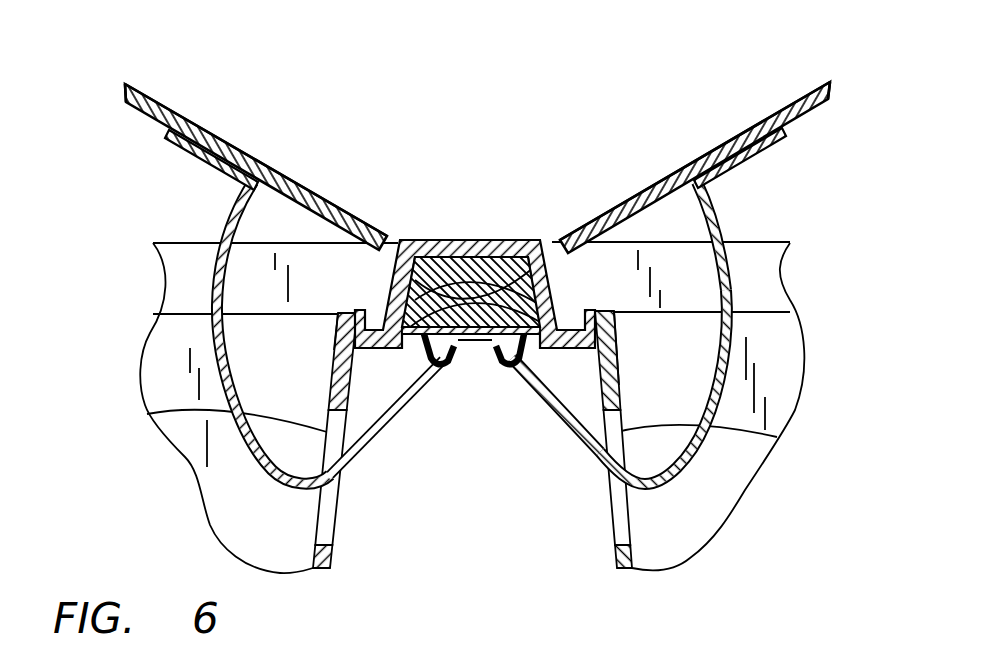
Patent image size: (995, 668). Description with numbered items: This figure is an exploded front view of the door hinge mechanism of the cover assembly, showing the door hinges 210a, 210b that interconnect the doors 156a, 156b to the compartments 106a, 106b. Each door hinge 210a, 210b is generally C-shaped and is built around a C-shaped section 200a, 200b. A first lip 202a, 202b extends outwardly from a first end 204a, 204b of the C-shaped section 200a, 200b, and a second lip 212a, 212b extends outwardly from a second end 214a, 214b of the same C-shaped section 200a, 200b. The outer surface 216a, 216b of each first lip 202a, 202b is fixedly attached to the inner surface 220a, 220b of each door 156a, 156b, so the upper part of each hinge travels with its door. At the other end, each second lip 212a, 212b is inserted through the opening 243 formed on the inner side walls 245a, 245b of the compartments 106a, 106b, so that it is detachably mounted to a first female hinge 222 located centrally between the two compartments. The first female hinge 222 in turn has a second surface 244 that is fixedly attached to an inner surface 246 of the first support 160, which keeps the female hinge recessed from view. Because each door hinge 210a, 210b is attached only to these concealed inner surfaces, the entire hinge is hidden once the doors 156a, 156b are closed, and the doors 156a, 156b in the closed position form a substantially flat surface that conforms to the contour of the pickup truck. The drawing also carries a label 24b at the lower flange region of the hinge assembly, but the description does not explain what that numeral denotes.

The door 156a is at (143, 85).
The door 156b is at (808, 80).
The outer surface of first lip 216a is at (203, 133).
The outer surface of first lip 216b is at (747, 120).
The inner surface of door 220a is at (152, 115).
The inner surface of door 220b is at (806, 110).
The first lip 202a is at (200, 147).
The first lip 202b is at (727, 165).
The first end of C-shaped section 204a is at (247, 165).
The first end of C-shaped section 204b is at (697, 160).
The door hinge 210a is at (236, 432).
The door hinge 210b is at (700, 443).
The second end of C-shaped section 214a is at (432, 362).
The second end of C-shaped section 214b is at (523, 365).
The second lip 212a is at (436, 362).
The second lip 212b is at (480, 337).
The first female hinge 222 is at (472, 337).
The second surface of first female hinge 244 is at (445, 262).
The first support 160 is at (512, 252).
The inner side wall 245a is at (333, 345).
The inner side wall 245b is at (617, 385).
The flange 24b is at (393, 350).
The C-shaped section 200a is at (328, 505).
The C-shaped section 200b is at (618, 568).
The opening 243 is at (155, 418).
The inner surface of first support 246 is at (513, 362).
The compartment 106a is at (273, 547).
The compartment 106b is at (677, 543).